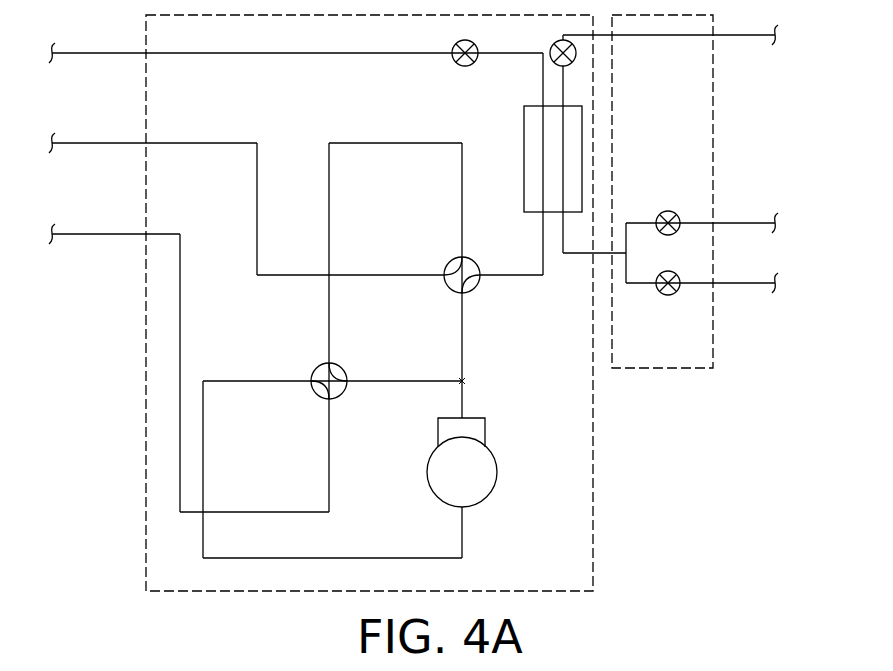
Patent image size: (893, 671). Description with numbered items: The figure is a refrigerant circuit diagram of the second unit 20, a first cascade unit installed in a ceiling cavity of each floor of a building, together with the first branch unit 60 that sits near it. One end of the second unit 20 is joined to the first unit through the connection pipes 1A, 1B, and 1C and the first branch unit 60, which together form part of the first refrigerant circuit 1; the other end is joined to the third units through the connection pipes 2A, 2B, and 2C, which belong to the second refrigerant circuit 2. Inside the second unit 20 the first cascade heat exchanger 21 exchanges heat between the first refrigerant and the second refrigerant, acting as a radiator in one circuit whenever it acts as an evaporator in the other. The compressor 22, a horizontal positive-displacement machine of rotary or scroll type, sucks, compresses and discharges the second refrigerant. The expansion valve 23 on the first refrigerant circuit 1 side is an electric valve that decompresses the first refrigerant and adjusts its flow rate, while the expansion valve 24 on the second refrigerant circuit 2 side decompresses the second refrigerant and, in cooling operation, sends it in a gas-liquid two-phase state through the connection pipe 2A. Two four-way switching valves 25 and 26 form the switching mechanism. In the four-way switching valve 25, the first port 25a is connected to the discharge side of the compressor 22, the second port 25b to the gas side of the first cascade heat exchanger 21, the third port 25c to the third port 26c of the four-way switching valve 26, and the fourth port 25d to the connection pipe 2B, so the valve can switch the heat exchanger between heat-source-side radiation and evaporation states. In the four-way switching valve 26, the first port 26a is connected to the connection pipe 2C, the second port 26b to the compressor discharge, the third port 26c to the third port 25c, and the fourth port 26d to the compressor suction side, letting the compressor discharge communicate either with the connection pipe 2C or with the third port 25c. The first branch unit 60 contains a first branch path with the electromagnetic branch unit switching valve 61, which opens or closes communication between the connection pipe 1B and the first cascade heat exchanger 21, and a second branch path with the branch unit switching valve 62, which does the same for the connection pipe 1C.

The first refrigerant circuit 1 is at (716, 422).
The connection pipe 1A is at (745, 35).
The connection pipe 1B is at (745, 223).
The connection pipe 1C is at (745, 283).
The second refrigerant circuit 2 is at (118, 420).
The connection pipe 2A is at (105, 53).
The connection pipe 2B is at (105, 143).
The connection pipe 2C is at (105, 234).
The second unit 20 is at (593, 520).
The first cascade heat exchanger 21 is at (524, 160).
The compressor 22 is at (497, 470).
The expansion valve 23 is at (576, 53).
The expansion valve 24 is at (456, 63).
The four-way switching valve 25 is at (459, 267).
The first port 25a is at (455, 290).
The second port 25b is at (476, 264).
The third port 25c is at (458, 258).
The fourth port 25d is at (447, 267).
The four-way switching valve 26 is at (328, 385).
The first port 26a is at (328, 400).
The second port 26b is at (344, 392).
The third port 26c is at (333, 368).
The fourth port 26d is at (318, 372).
The first branch unit 60 is at (660, 368).
The branch unit switching valve 61 is at (668, 211).
The branch unit switching valve 62 is at (668, 295).